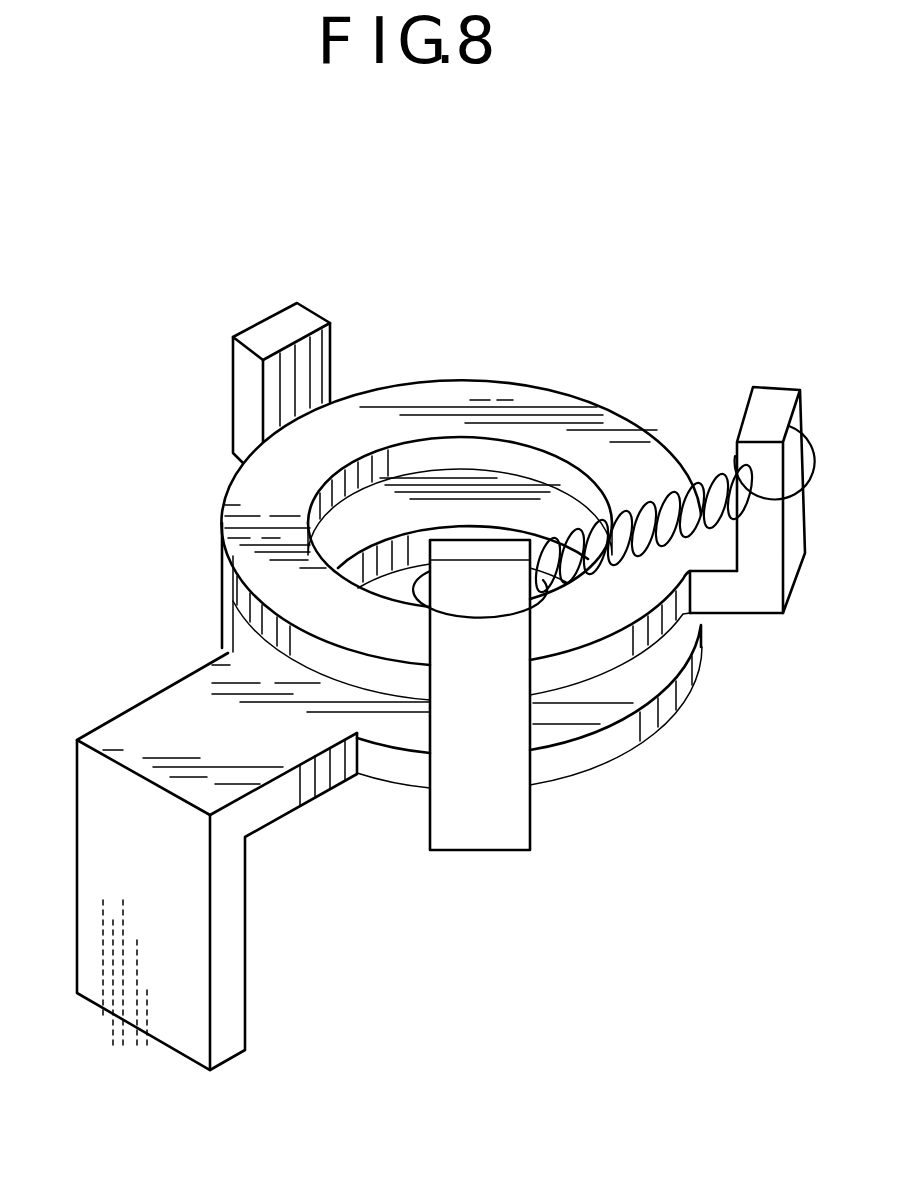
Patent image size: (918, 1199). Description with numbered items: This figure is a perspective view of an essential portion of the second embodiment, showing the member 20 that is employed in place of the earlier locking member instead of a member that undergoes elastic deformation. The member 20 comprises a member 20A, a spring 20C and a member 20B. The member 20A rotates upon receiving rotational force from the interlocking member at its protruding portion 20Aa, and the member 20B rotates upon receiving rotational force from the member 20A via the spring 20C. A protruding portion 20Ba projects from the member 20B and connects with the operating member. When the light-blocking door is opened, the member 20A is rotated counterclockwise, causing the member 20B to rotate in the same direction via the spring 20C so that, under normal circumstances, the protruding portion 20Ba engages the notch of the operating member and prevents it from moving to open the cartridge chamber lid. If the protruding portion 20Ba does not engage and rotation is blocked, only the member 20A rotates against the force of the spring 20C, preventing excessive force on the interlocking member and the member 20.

The member 20 is at (431, 266).
The member 20A is at (487, 402).
The protruding portion 20Aa is at (247, 364).
The member 20B is at (640, 730).
The protruding portion 20Ba is at (227, 1037).
The spring 20C is at (663, 490).